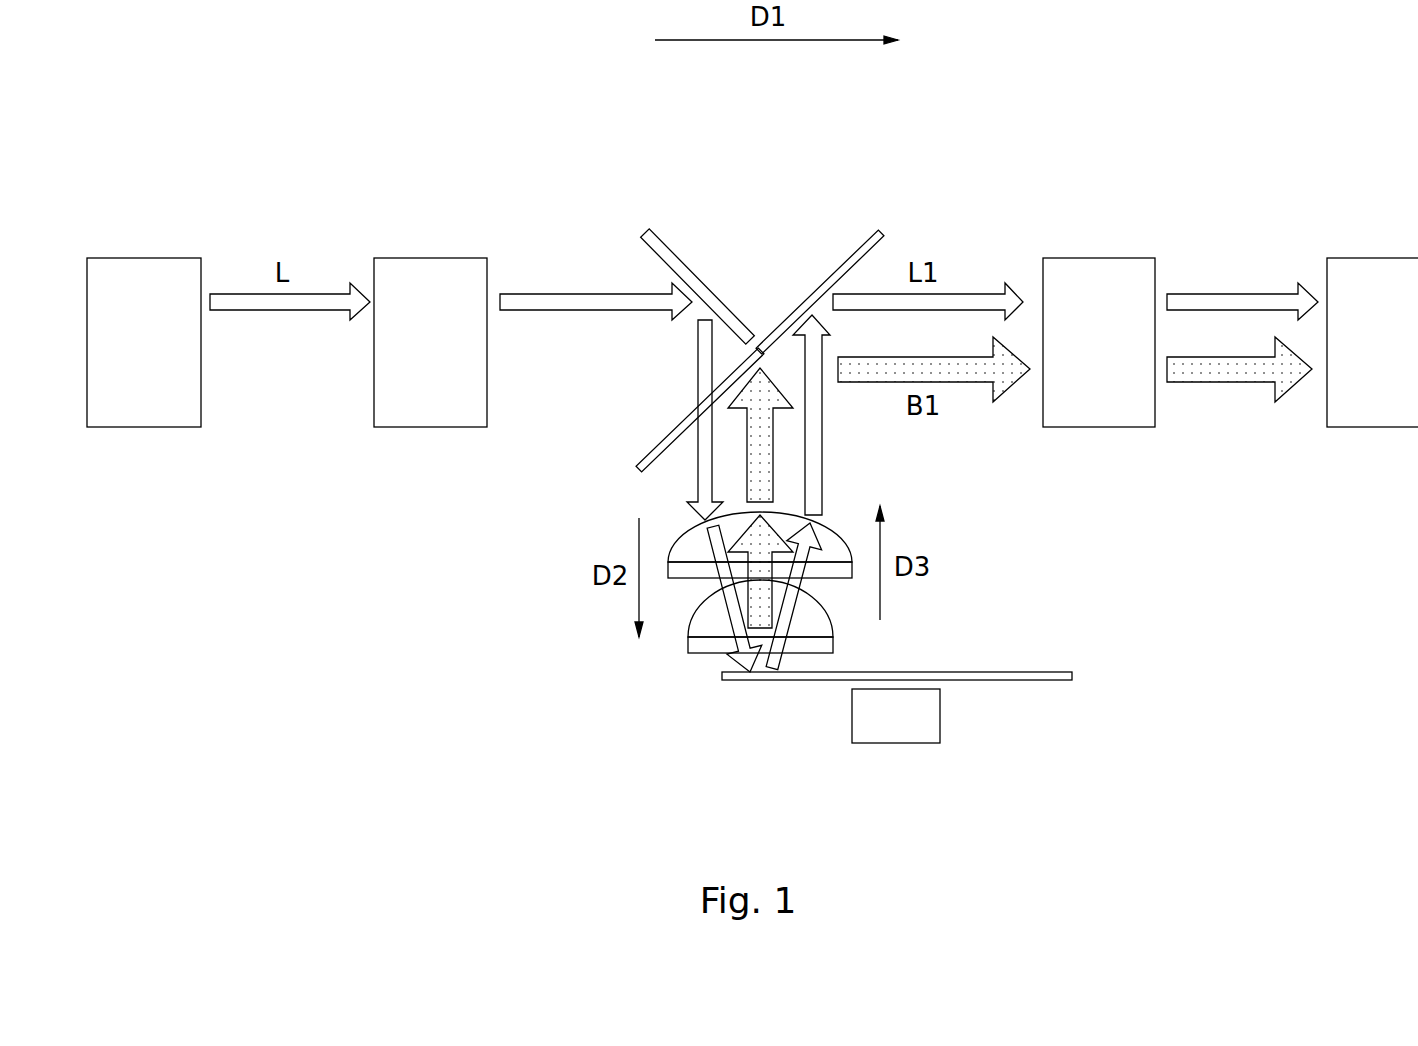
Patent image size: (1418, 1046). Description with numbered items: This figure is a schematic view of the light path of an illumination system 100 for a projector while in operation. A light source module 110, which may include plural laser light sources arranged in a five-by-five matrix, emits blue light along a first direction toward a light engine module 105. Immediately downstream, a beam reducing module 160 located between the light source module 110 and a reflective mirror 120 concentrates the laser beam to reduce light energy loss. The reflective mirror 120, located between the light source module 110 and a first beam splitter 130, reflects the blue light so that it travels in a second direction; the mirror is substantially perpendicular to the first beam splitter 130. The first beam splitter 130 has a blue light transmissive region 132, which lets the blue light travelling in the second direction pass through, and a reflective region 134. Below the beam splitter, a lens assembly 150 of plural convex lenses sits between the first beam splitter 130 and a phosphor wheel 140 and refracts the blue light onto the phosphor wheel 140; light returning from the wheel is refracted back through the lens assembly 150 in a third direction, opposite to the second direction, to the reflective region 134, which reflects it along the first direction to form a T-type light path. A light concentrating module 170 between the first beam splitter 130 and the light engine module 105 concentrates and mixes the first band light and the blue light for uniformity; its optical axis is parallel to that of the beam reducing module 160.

The illumination system 100 is at (125, 151).
The light engine module 105 is at (1405, 357).
The light source module 110 is at (166, 357).
The reflective mirror 120 is at (682, 263).
The first beam splitter 130 is at (760, 290).
The blue light transmissive region 132 is at (738, 363).
The reflective region 134 is at (830, 273).
The phosphor wheel 140 is at (1063, 672).
The lens assembly 150 is at (668, 672).
The beam reducing module 160 is at (453, 357).
The light concentrating module 170 is at (1123, 357).